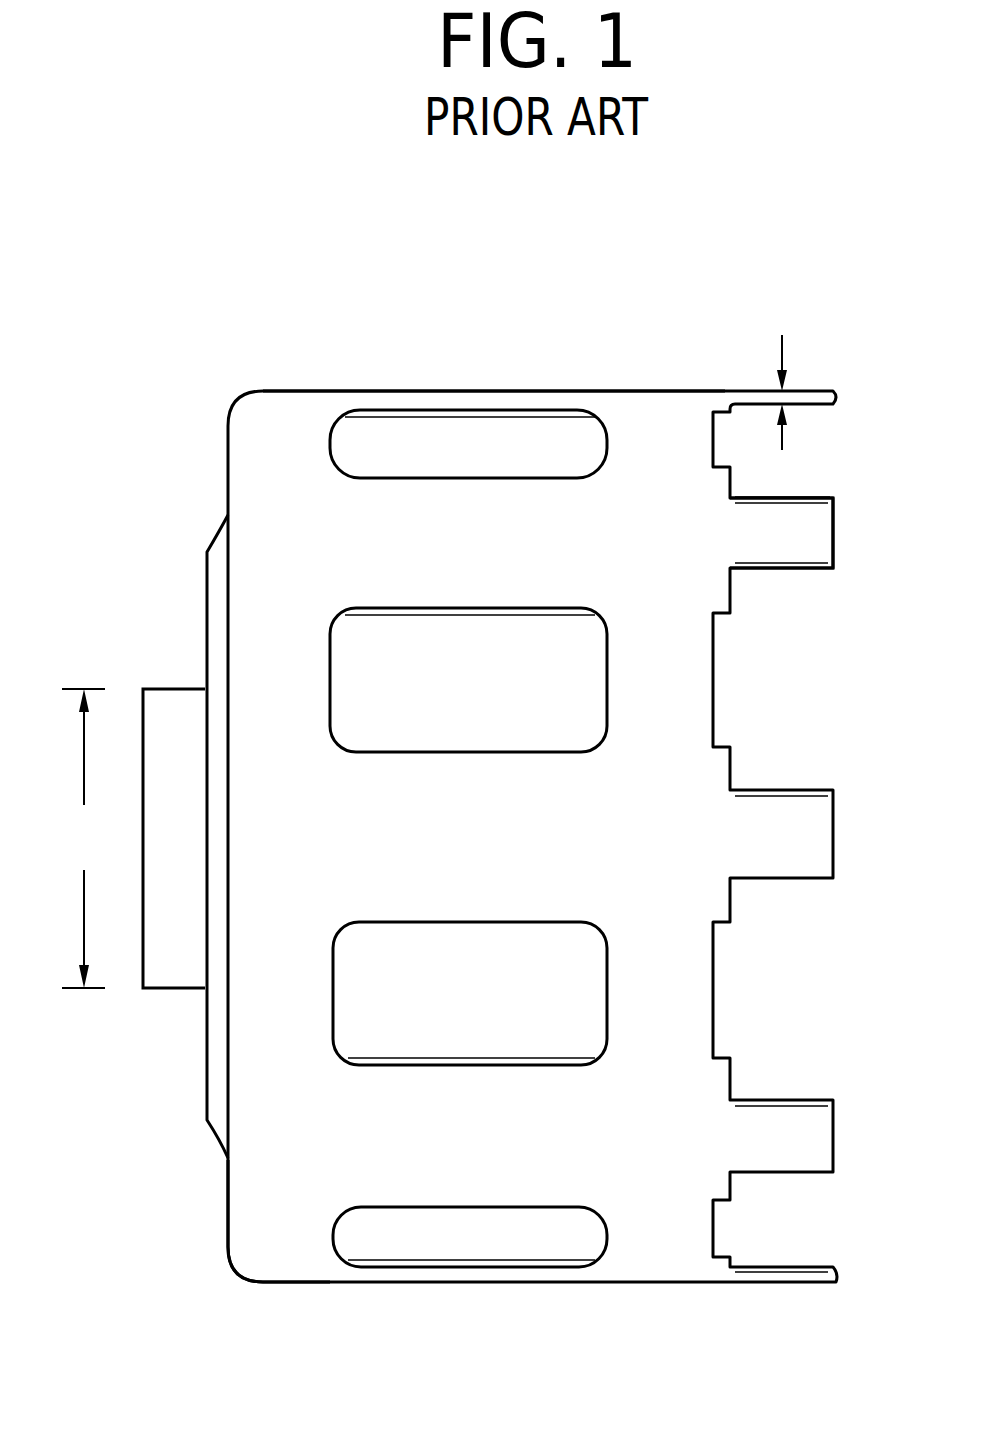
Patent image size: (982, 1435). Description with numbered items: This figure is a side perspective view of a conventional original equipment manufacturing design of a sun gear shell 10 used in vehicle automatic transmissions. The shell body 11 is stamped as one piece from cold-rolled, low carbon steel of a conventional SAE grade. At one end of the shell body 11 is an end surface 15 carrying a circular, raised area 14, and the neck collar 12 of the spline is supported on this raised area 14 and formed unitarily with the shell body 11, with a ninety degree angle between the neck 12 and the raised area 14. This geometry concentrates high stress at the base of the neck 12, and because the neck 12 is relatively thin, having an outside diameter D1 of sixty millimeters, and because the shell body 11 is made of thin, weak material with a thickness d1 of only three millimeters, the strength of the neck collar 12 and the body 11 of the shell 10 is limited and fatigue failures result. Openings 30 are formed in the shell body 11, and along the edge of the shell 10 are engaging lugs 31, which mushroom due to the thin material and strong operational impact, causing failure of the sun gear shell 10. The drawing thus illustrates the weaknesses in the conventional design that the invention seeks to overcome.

The sun gear shell 10 is at (582, 343).
The shell body 11 is at (300, 390).
The neck collar 12 is at (172, 688).
The raised area 14 is at (205, 548).
The end surface 15 is at (228, 1195).
The opening 30 is at (495, 608).
The engaging lug 31 is at (780, 573).
The outside diameter of the neck D1 is at (89, 838).
The thickness of the shell body d1 is at (809, 378).